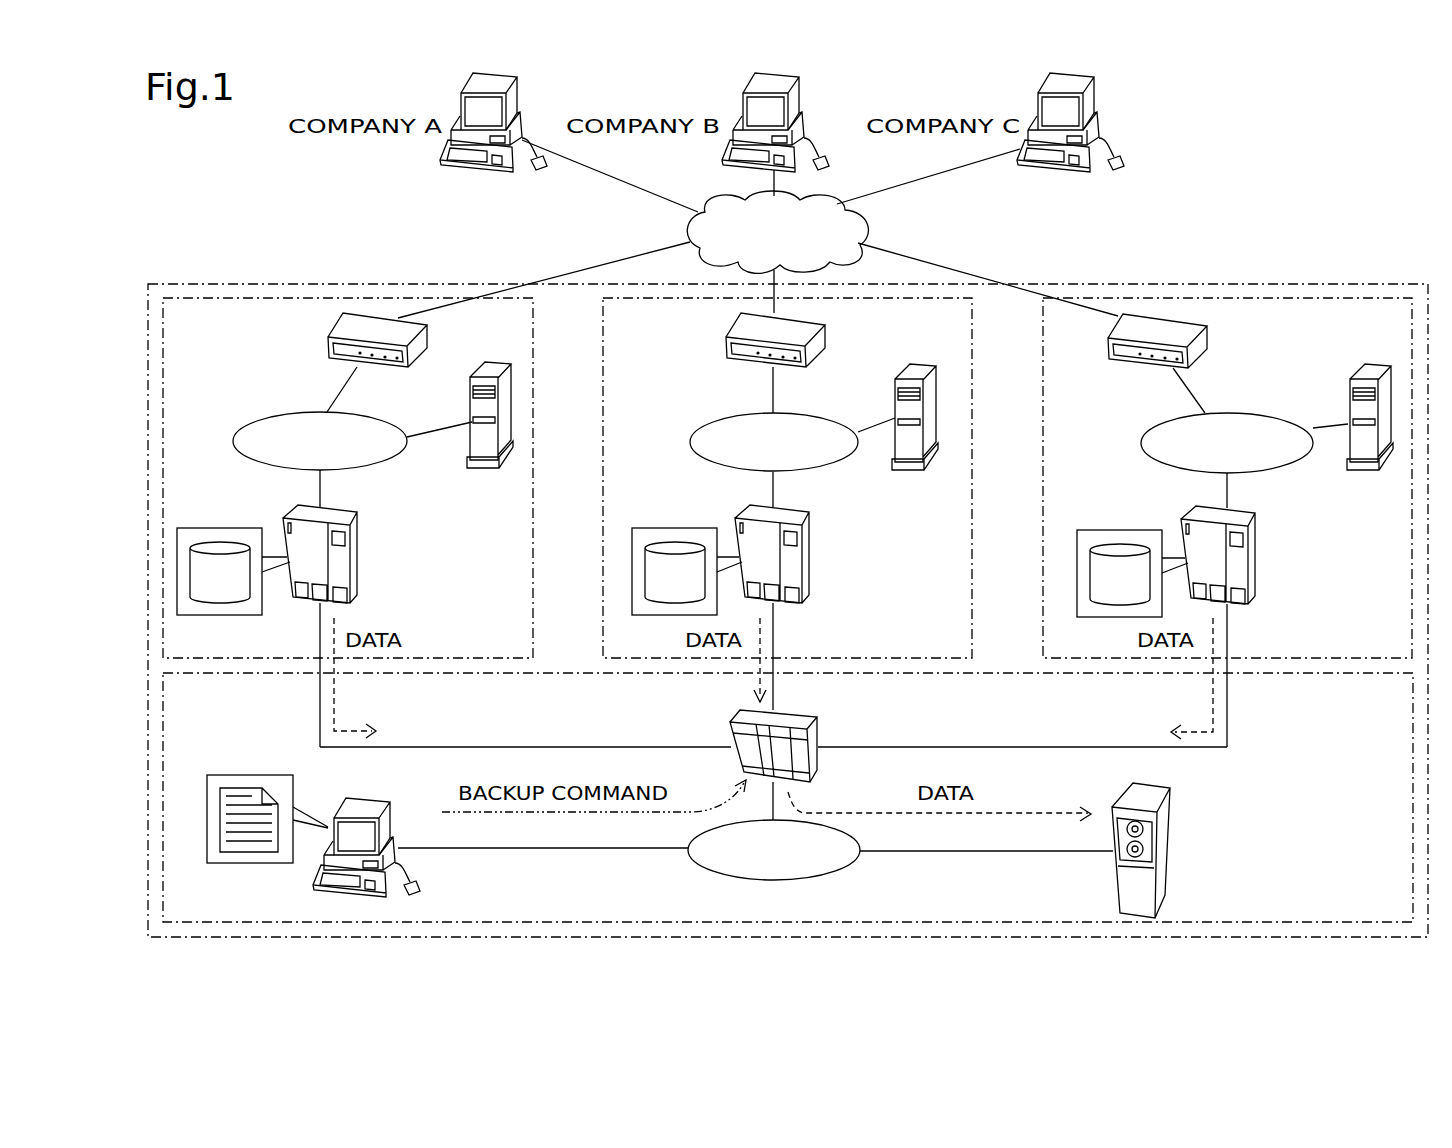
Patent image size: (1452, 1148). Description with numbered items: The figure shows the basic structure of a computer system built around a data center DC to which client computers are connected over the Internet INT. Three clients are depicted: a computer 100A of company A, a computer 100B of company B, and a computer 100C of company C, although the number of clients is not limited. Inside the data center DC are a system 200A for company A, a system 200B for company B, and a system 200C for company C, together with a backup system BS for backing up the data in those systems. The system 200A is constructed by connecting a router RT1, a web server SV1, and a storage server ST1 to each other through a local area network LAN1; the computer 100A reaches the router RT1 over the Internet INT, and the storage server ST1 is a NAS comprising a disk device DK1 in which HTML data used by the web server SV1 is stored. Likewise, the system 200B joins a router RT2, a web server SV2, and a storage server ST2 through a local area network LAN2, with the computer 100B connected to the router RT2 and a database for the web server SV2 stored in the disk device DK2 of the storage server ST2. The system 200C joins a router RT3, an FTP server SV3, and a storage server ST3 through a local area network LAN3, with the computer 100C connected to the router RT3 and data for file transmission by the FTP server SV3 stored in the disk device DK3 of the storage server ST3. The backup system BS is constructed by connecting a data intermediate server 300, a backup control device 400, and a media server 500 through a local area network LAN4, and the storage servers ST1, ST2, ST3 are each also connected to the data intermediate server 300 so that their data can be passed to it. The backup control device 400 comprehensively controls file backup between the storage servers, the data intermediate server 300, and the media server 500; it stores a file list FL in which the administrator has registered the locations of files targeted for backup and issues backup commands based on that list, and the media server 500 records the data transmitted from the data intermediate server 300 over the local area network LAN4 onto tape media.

The computer of company A 100A is at (519, 94).
The computer of company B 100B is at (802, 94).
The computer of company C 100C is at (1098, 94).
The Internet INT is at (858, 225).
The data center DC is at (1257, 283).
The system for company A 200A is at (515, 646).
The system for company B 200B is at (953, 646).
The system for company C 200C is at (1394, 646).
The router RT1 is at (335, 322).
The router RT2 is at (732, 323).
The router RT3 is at (1210, 337).
The web server SV1 is at (475, 373).
The web server SV2 is at (893, 370).
The FTP server SV3 is at (1355, 370).
The local area network LAN1 is at (346, 454).
The local area network LAN2 is at (800, 455).
The local area network LAN3 is at (1253, 456).
The local area network LAN4 is at (800, 863).
The disk device DK1 is at (218, 542).
The disk device DK2 is at (672, 542).
The disk device DK3 is at (1112, 542).
The storage server ST1 is at (357, 548).
The storage server ST2 is at (812, 548).
The storage server ST3 is at (1252, 567).
The data intermediate server 300 is at (803, 710).
The backup control device 400 is at (367, 798).
The media server 500 is at (1170, 833).
The file list FL is at (243, 788).
The backup system BS is at (1383, 896).